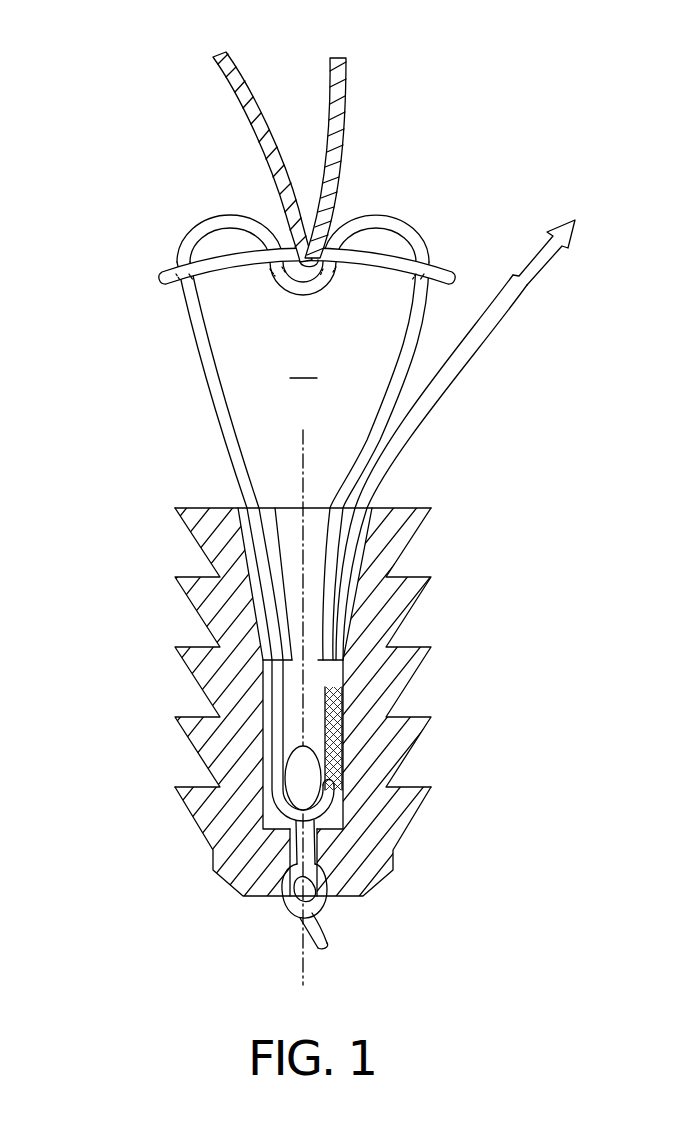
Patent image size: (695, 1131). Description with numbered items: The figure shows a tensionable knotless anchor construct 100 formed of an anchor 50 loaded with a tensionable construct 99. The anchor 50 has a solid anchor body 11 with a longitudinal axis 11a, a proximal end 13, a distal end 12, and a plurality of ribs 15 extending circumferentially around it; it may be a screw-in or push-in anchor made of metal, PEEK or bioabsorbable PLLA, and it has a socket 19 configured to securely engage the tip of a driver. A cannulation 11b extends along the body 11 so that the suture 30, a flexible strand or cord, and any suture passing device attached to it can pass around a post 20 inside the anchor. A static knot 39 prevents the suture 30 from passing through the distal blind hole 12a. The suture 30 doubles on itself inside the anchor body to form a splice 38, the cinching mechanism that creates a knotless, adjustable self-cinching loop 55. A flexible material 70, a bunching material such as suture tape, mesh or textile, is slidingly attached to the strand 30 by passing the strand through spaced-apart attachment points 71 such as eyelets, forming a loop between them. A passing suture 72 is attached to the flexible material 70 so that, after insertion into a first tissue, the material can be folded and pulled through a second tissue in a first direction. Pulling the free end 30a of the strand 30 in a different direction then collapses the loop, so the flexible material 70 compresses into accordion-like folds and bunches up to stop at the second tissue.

The tensionable knotless anchor construct 100 is at (118, 68).
The tensionable construct 99 is at (166, 415).
The anchor body 11 is at (347, 699).
The longitudinal axis 11a is at (303, 950).
The cannulation 11b is at (292, 523).
The distal end 12 is at (368, 860).
The distal blind hole 12a is at (280, 896).
The proximal end 13 is at (208, 515).
The ribs 15 is at (183, 655).
The socket 19 is at (278, 540).
The post 20 is at (297, 773).
The suture 30 is at (342, 515).
The free end 30a is at (466, 353).
The splice 38 is at (346, 752).
The static knot 39 is at (322, 905).
The anchor 50 is at (400, 590).
The knotless, adjustable self-cinching loop 55 is at (303, 365).
The flexible material 70 is at (150, 292).
The attachment points 71 is at (168, 275).
The passing suture 72 is at (348, 128).